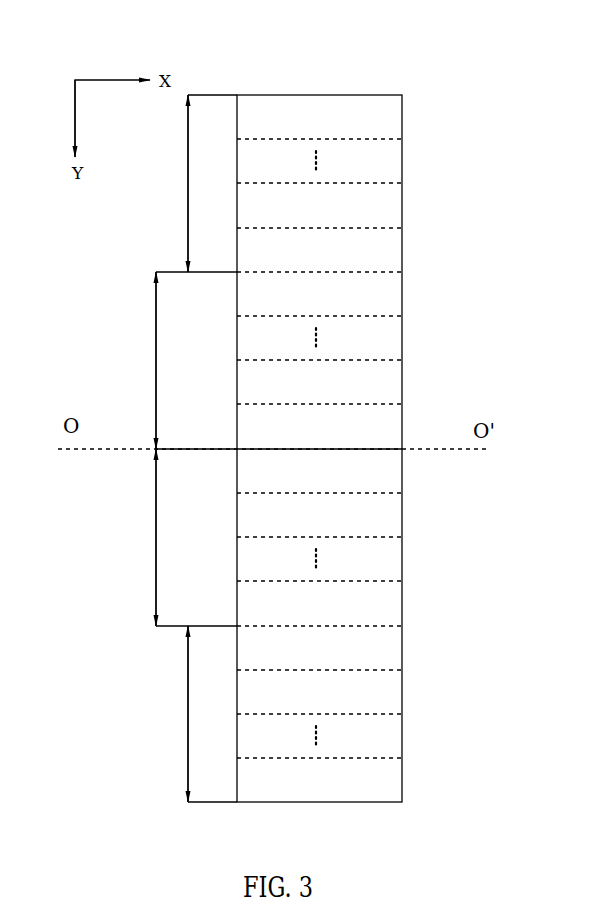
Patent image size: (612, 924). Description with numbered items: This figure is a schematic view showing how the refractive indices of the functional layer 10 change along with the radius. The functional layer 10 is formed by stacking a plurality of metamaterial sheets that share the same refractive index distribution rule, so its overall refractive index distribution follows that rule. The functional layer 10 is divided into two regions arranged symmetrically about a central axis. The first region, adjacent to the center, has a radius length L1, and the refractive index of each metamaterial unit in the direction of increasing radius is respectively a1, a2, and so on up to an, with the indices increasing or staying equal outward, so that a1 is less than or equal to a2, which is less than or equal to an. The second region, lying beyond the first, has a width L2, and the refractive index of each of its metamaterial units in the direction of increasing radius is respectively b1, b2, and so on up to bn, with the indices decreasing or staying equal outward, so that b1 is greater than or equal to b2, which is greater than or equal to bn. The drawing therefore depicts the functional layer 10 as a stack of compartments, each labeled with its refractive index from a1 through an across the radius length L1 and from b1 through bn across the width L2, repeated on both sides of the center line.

The functional layer 10 is at (352, 431).
The radius length of the first region L1 is at (178, 449).
The width of the second region L2 is at (196, 448).
The refractive index a1 is at (319, 448).
The refractive index a2 is at (319, 448).
The refractive index an is at (319, 448).
The refractive index b1 is at (319, 448).
The refractive index b2 is at (319, 448).
The refractive index bn is at (319, 448).